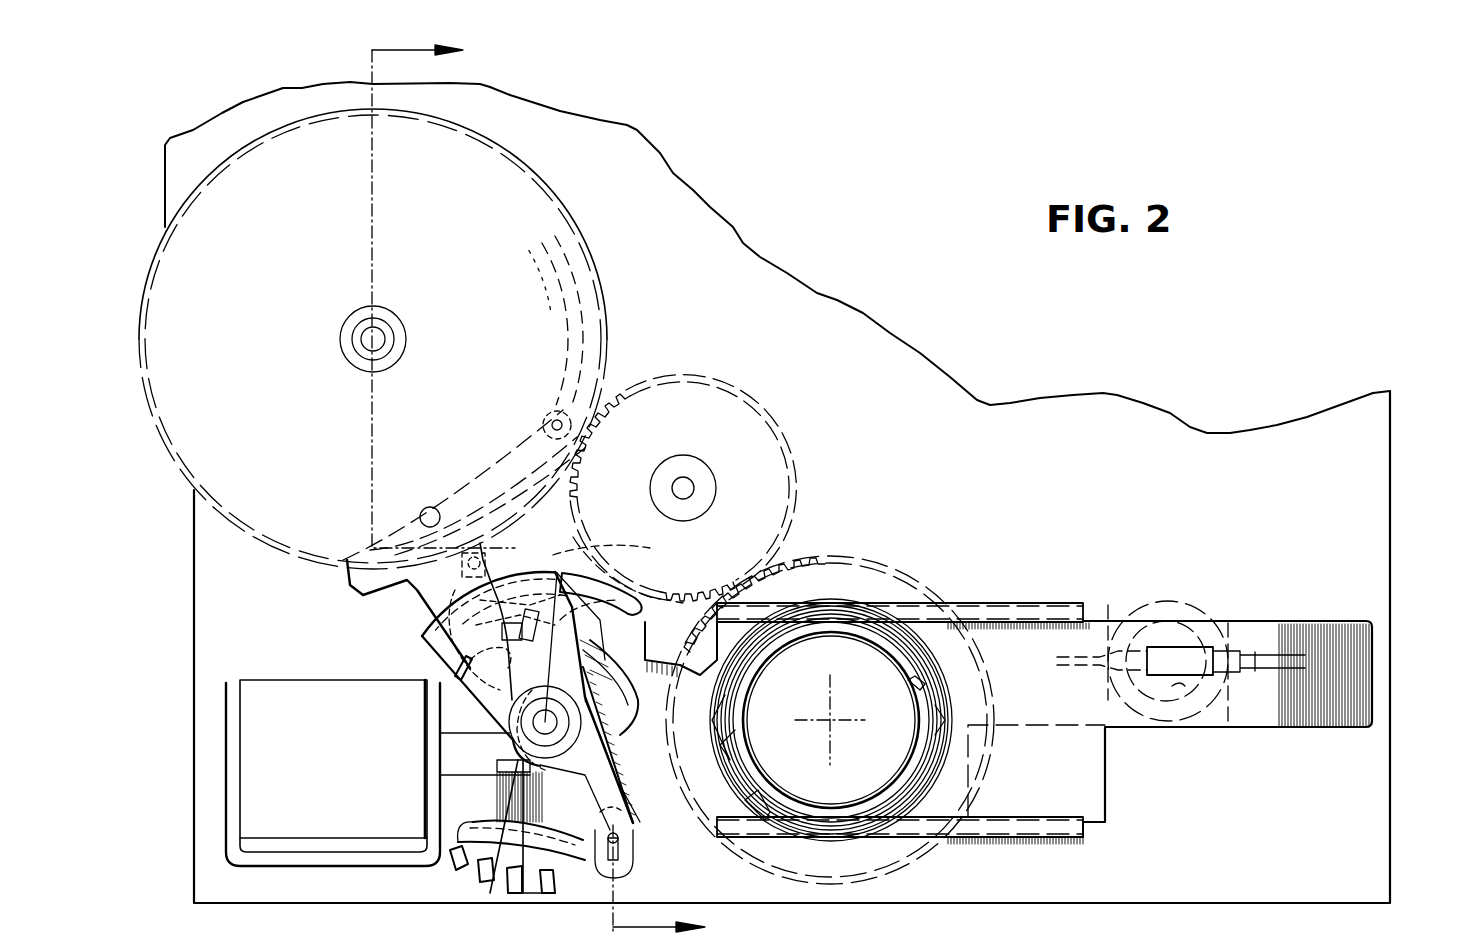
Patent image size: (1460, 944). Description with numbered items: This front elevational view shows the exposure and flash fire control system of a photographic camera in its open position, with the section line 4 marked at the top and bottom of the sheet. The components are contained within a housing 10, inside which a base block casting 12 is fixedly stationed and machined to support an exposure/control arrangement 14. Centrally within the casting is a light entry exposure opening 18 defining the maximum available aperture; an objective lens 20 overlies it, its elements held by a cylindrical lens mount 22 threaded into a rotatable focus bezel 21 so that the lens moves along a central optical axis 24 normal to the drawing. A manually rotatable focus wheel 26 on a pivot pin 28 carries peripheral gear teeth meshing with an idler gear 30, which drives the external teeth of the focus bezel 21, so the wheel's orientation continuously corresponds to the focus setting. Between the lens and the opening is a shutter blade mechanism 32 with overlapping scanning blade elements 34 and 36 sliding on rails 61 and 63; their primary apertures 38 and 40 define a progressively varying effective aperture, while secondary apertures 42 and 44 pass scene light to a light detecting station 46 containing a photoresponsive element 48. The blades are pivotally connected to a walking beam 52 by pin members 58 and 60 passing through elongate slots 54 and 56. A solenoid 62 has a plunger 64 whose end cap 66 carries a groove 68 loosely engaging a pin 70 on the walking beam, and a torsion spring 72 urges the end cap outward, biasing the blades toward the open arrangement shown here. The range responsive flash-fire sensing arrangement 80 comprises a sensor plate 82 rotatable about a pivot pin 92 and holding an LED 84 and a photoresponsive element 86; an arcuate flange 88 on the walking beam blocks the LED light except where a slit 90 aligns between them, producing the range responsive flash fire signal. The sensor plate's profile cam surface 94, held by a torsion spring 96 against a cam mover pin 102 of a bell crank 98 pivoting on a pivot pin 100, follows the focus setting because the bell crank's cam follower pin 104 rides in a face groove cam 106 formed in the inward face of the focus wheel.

The section line 4- 4 is at (522, 489).
The housing 10 is at (1394, 798).
The base block casting 12 is at (1118, 508).
The exposure/control arrangement 14 is at (925, 580).
The light entry exposure opening 18 is at (778, 790).
The objective lens 20 is at (870, 812).
The focus bezel 21 is at (822, 552).
The cylindrical lens mount 22 is at (908, 815).
The central optical axis 24 is at (835, 714).
The focus wheel 26 is at (553, 184).
The pivot pin 28 is at (388, 315).
The idler gear 30 is at (757, 395).
The shutter blade mechanism 32 is at (1005, 604).
The shutter blade element 34 is at (1260, 729).
The shutter blade element 36 is at (524, 826).
The primary aperture 38 is at (915, 683).
The primary aperture 40 is at (728, 770).
The secondary aperture 42 is at (1250, 650).
The secondary aperture 44 is at (1118, 625).
The light detecting station 46 is at (1133, 705).
The photoresponsive element 48 is at (1183, 692).
The walking beam 52 is at (590, 765).
The elongate slot 54 is at (632, 860).
The elongate slot 56 is at (456, 580).
The pin member 58 is at (630, 840).
The pin member 60 is at (505, 568).
The rail 61 is at (1052, 604).
The solenoid 62 is at (303, 682).
The rail 63 is at (1085, 840).
The plunger 64 is at (463, 776).
The end cap 66 is at (598, 748).
The slot 68 is at (521, 840).
The pin 70 is at (621, 687).
The torsion spring 72 is at (475, 880).
The range responsive flash-fire sensing arrangement 80 is at (655, 588).
The sensor plate 82 is at (590, 648).
The LED 84 is at (580, 562).
The photoresponsive element 86 is at (545, 671).
The arcuate flange 88 is at (628, 653).
The slit 90 is at (600, 577).
The pivot pin 92 is at (505, 714).
The profile cam surface 94 is at (450, 641).
The torsion spring 96 is at (538, 892).
The bell crank 98 is at (469, 472).
The pivot pin 100 is at (428, 507).
The cam mover pin 102 is at (460, 661).
The cam follower pin 104 is at (545, 412).
The face groove cam 106 is at (567, 365).